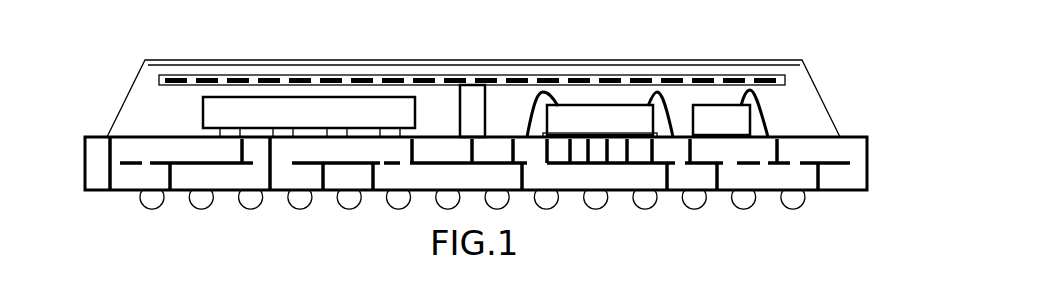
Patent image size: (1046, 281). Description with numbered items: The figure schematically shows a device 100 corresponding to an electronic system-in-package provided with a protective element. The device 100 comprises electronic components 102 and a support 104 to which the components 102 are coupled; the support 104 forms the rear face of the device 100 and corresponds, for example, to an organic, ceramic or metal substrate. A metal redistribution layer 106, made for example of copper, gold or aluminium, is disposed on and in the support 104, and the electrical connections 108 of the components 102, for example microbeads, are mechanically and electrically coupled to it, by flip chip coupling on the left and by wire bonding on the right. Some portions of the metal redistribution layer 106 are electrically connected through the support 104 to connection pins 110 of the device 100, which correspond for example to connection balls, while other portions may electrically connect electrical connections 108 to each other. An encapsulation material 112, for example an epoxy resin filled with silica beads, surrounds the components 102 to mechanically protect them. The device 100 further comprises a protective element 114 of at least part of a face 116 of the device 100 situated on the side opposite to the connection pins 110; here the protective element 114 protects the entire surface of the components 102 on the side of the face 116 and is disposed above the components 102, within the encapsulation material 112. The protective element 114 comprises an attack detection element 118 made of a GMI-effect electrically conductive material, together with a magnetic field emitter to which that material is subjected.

The device 100 is at (820, 40).
The electronic components 102 is at (222, 110).
The support 104 is at (80, 168).
The metal redistribution layer 106 is at (217, 167).
The electrical connections 108 is at (337, 133).
The connection pins 110 is at (298, 201).
The encapsulation material 112 is at (833, 129).
The protective element 114 is at (160, 80).
The face 116 is at (269, 60).
The attack detection element 118 is at (438, 82).